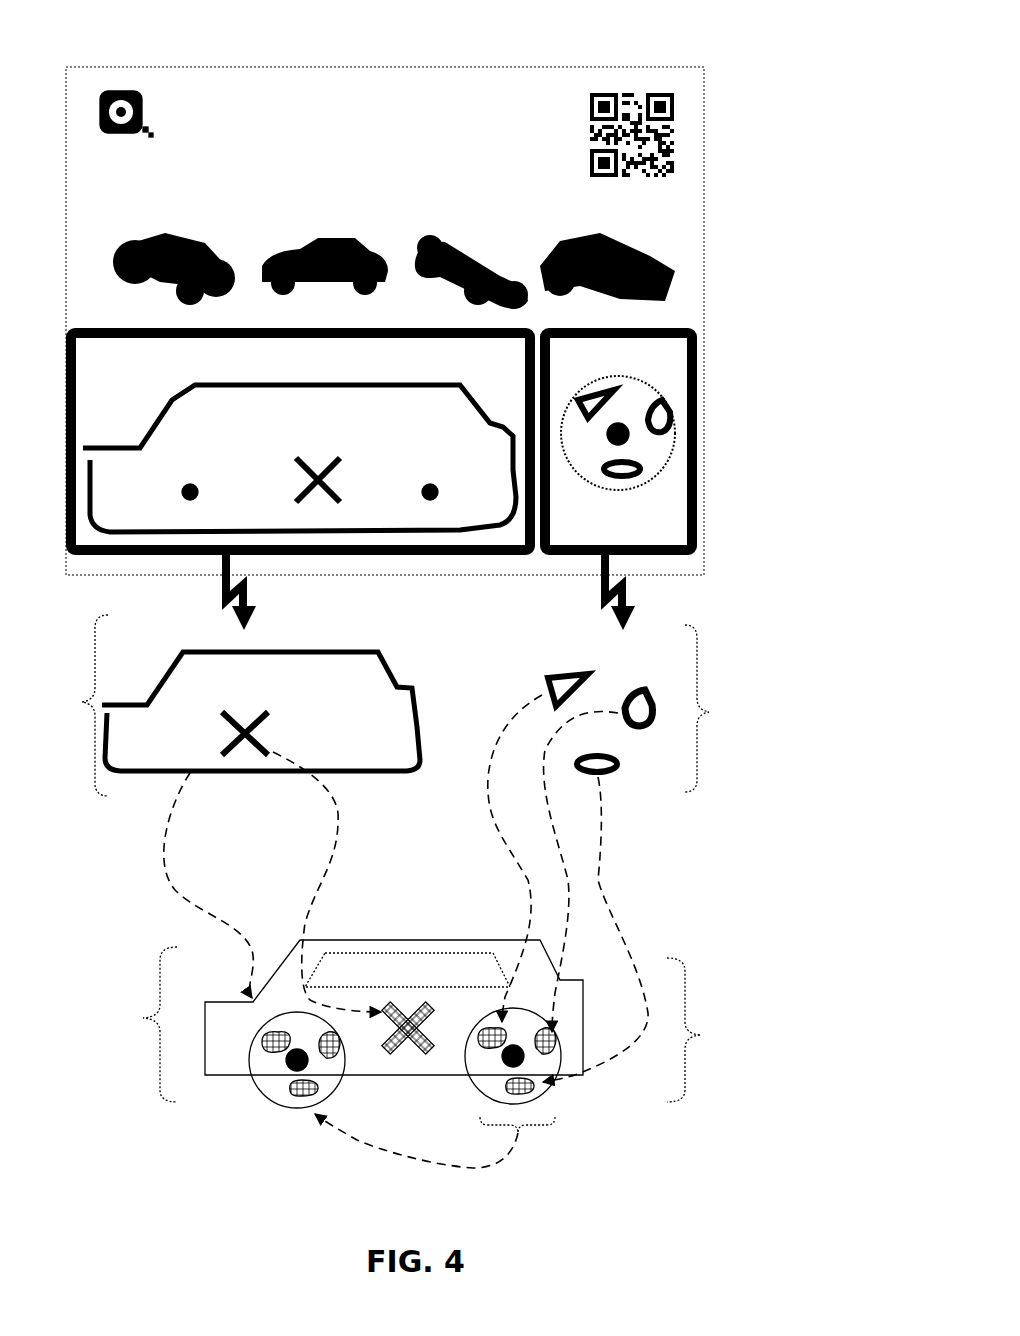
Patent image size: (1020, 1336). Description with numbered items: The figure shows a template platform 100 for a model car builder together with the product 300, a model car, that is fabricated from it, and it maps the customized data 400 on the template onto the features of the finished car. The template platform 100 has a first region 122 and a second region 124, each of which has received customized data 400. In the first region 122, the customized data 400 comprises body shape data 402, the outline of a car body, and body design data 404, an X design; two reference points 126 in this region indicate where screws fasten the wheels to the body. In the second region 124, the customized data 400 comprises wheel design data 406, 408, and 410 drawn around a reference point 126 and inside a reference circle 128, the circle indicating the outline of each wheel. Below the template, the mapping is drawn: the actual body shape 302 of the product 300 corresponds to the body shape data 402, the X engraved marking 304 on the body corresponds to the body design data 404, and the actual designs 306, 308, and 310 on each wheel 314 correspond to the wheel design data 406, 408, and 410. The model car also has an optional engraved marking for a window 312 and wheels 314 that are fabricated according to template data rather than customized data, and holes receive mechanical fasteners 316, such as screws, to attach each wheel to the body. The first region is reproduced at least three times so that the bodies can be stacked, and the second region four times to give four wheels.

The template platform 100 is at (499, 86).
The first region 122 is at (287, 557).
The second region 124 is at (673, 558).
The reference point 126 is at (192, 483).
The reference circle 128 is at (653, 385).
The product 300 is at (420, 1013).
The actual body shape 302 is at (248, 996).
The engraved marking 304 is at (393, 1014).
The actual design 306 is at (502, 1016).
The actual design 308 is at (558, 1037).
The actual design 310 is at (548, 1088).
The window 312 is at (437, 952).
The wheel 314 is at (530, 1100).
The mechanical fastener 316 is at (503, 1060).
The customized data 400 is at (392, 705).
The body shape data 402 is at (167, 407).
The body design data 404 is at (304, 461).
The wheel design data 406 is at (595, 388).
The wheel design data 408 is at (673, 420).
The wheel design data 410 is at (643, 477).